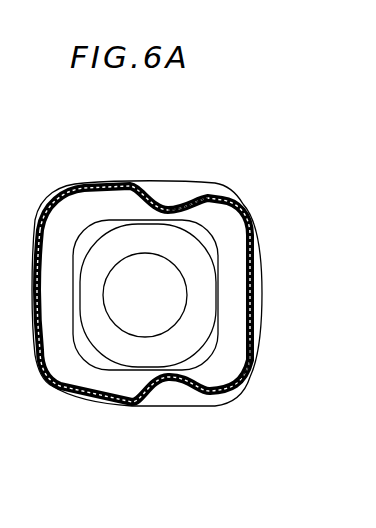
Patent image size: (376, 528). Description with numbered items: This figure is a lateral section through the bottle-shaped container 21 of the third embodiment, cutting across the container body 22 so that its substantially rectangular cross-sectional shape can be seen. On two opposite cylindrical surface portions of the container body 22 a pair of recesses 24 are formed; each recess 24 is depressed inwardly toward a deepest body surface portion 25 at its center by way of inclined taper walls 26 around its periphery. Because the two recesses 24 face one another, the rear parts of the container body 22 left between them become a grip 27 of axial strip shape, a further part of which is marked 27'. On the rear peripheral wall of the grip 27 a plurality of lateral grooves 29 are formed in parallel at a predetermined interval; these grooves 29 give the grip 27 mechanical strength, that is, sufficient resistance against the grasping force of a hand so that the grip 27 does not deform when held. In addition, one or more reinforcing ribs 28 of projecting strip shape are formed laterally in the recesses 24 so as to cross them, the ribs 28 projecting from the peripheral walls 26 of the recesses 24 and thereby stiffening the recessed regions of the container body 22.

The bottle-shaped container 21 is at (82, 406).
The container body 22 is at (52, 386).
The recesses 24 is at (153, 377).
The deepest body surface portion 25 is at (177, 377).
The inclined taper walls 26 is at (207, 377).
The grip 27 is at (183, 294).
The gasket band portion 27' is at (244, 265).
The reinforcing ribs 28 is at (173, 205).
The lateral grooves 29 is at (263, 293).